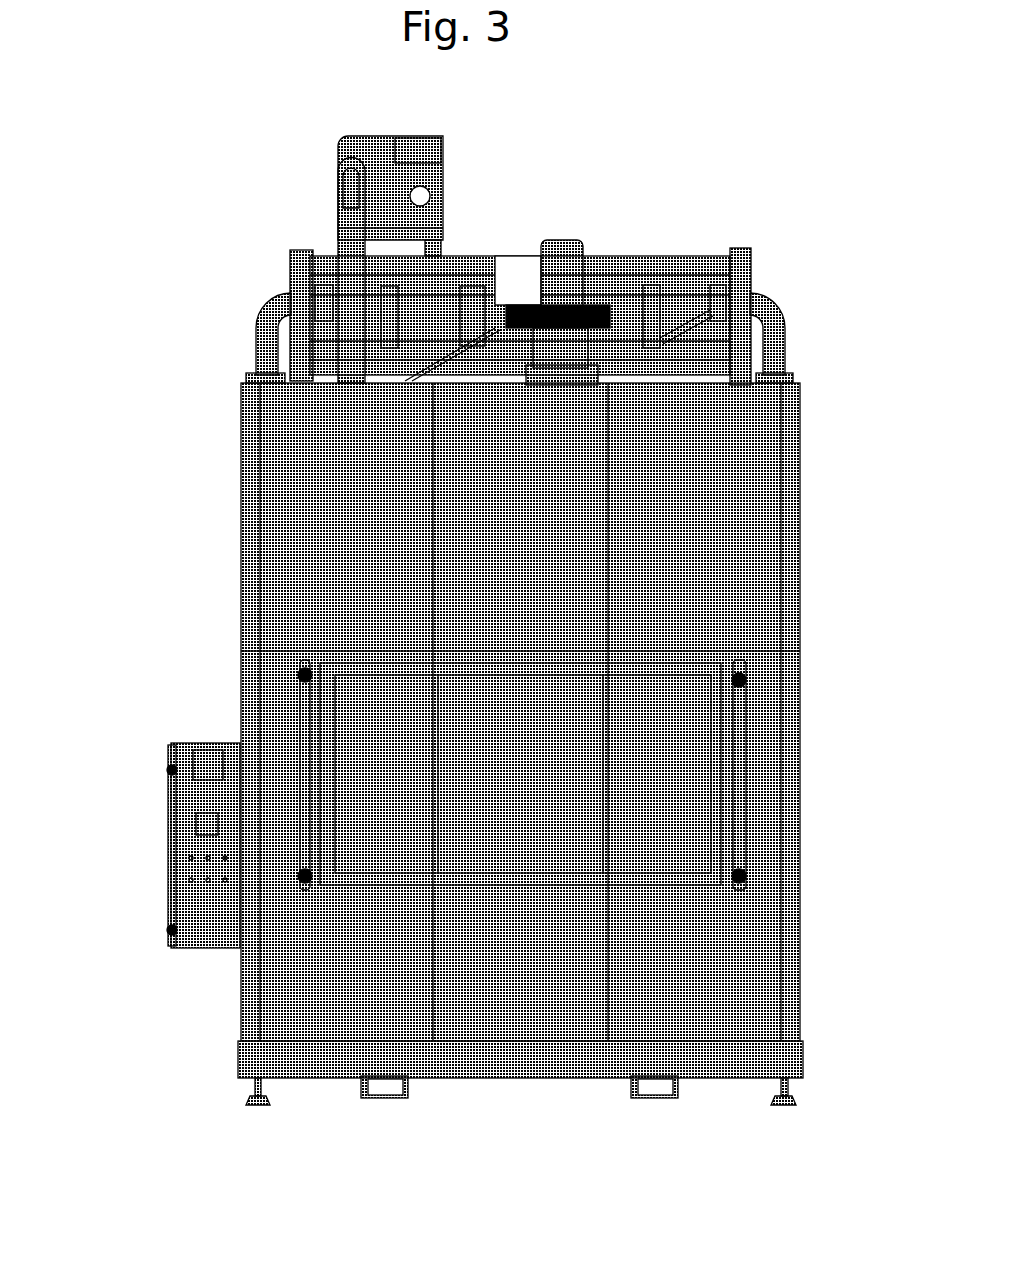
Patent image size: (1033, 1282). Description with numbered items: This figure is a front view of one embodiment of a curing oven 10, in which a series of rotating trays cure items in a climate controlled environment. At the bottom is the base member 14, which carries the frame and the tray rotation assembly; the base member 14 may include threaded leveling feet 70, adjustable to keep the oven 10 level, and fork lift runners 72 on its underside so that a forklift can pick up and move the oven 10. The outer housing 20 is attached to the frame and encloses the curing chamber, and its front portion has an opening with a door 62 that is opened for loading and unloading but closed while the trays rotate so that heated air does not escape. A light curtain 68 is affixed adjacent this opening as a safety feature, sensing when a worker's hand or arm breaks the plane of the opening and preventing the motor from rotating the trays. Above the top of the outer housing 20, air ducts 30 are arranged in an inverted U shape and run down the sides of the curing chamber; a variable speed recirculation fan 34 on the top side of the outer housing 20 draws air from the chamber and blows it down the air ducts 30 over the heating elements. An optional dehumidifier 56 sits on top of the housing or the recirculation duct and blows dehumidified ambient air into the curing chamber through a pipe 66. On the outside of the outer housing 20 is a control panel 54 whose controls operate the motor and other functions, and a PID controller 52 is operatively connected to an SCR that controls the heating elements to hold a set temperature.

The curing oven 10 is at (153, 461).
The base member 14 is at (490, 1067).
The outer housing 20 is at (715, 505).
The air ducts 30 is at (250, 340).
The variable speed recirculation fan 34 is at (590, 287).
The PID controller 52 is at (183, 817).
The control panel 54 is at (182, 917).
The dehumidifier 56 is at (435, 197).
The door 62 is at (505, 748).
The pipe 66 is at (328, 215).
The light curtain 68 is at (292, 727).
The threaded leveling feet 70 is at (245, 1093).
The fork lift runners 72 is at (370, 1090).